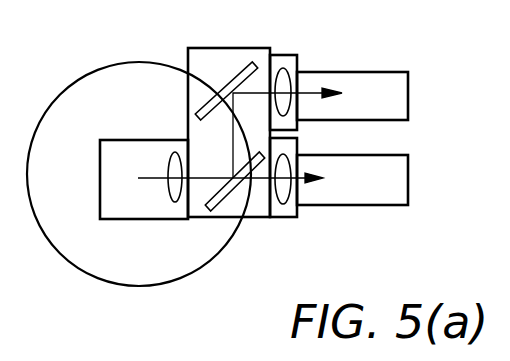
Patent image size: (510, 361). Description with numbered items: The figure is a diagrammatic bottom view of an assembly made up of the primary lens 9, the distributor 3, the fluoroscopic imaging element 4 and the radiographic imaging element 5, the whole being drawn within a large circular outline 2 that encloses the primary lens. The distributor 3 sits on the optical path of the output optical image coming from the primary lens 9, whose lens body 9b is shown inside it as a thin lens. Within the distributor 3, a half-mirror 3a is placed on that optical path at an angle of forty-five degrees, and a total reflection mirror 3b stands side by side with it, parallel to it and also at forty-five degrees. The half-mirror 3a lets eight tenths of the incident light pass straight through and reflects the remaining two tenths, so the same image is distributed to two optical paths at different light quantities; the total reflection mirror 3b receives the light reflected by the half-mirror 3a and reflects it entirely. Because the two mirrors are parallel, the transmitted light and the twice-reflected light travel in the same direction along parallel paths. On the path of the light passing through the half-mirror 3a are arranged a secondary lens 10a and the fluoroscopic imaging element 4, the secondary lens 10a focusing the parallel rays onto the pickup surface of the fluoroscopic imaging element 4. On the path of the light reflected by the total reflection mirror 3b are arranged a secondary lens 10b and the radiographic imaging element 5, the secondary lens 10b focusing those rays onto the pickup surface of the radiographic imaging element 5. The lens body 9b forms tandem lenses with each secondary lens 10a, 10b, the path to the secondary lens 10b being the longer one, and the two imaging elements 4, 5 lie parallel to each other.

The housing 2 is at (65, 92).
The distributor 3 is at (228, 36).
The half-mirror 3a is at (231, 196).
The total reflection mirror 3b is at (220, 93).
The fluoroscopic imaging element 4 is at (380, 205).
The radiographic imaging element 5 is at (375, 72).
The primary lens 9 is at (123, 236).
The lens body 9b is at (169, 196).
The secondary lens 10a is at (287, 205).
The secondary lens 10b is at (285, 55).